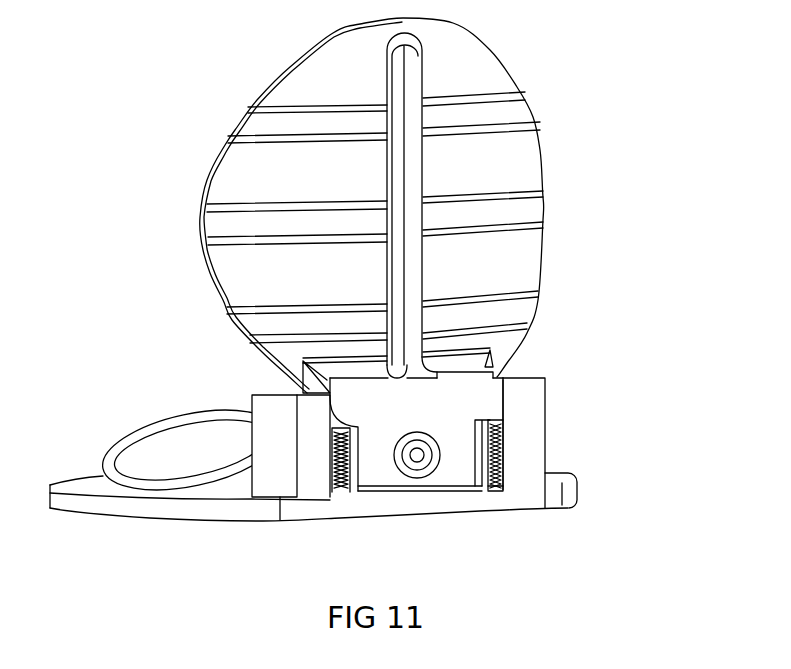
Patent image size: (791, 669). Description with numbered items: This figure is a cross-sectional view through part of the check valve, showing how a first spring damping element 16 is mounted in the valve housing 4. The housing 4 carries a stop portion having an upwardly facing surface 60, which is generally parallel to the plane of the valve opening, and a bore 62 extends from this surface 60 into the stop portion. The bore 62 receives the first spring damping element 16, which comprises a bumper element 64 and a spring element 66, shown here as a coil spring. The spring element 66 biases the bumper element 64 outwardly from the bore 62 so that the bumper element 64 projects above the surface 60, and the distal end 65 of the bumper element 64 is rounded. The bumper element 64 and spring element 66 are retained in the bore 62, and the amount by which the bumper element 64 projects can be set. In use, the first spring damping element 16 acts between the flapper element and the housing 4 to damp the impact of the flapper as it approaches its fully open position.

The valve housing 4 is at (262, 515).
The first spring damping element 16 is at (347, 499).
The upwardly facing surface 60 is at (307, 393).
The bore 62 is at (507, 483).
The bumper element 64 is at (507, 430).
The distal end 65 is at (520, 380).
The spring element 66 is at (508, 463).